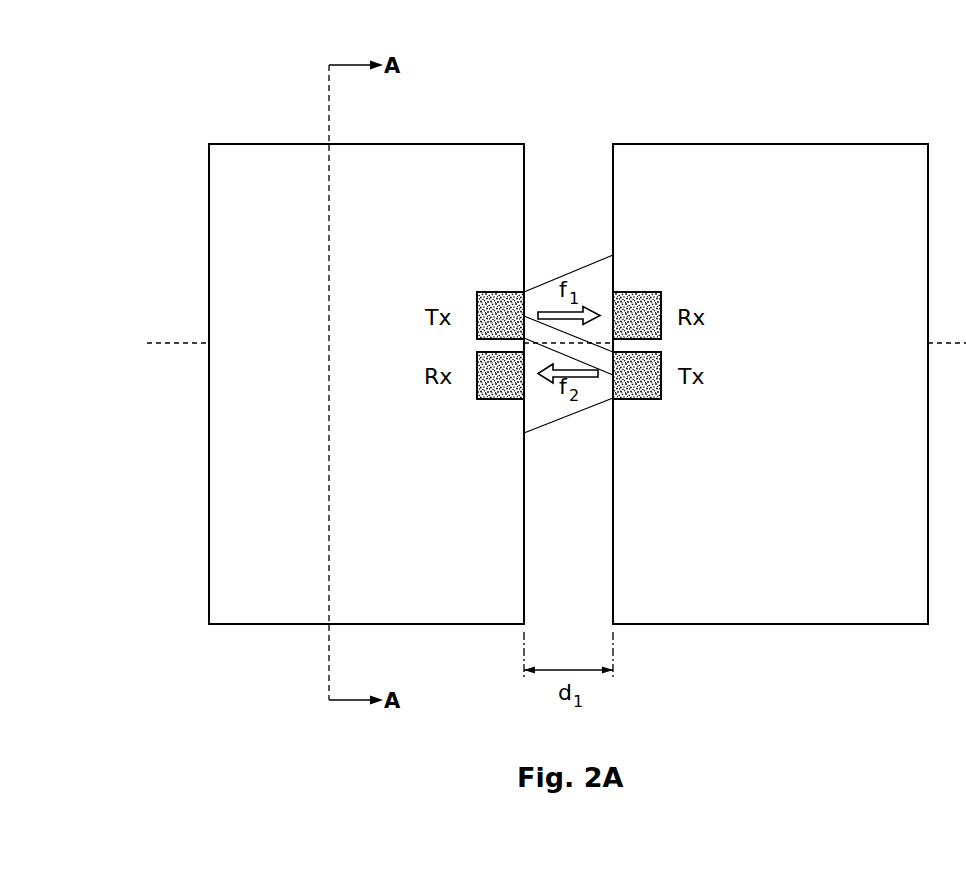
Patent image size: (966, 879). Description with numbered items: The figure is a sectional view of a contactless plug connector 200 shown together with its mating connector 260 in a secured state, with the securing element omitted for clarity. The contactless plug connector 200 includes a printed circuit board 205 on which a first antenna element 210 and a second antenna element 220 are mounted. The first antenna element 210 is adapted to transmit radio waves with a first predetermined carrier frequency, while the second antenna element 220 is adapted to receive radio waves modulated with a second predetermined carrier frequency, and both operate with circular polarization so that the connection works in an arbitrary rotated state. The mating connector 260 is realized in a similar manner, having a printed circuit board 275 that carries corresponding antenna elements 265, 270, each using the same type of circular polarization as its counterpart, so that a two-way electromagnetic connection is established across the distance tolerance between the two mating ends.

The contactless plug connector 200 is at (427, 136).
The printed circuit board 205 is at (497, 160).
The first antenna element 210 is at (498, 298).
The second antenna element 220 is at (500, 393).
The mating connector 260 is at (763, 136).
The antenna element of the mating connector 265 is at (637, 298).
The antenna element of the mating connector 270 is at (637, 393).
The printed circuit board of the mating connector 275 is at (874, 160).